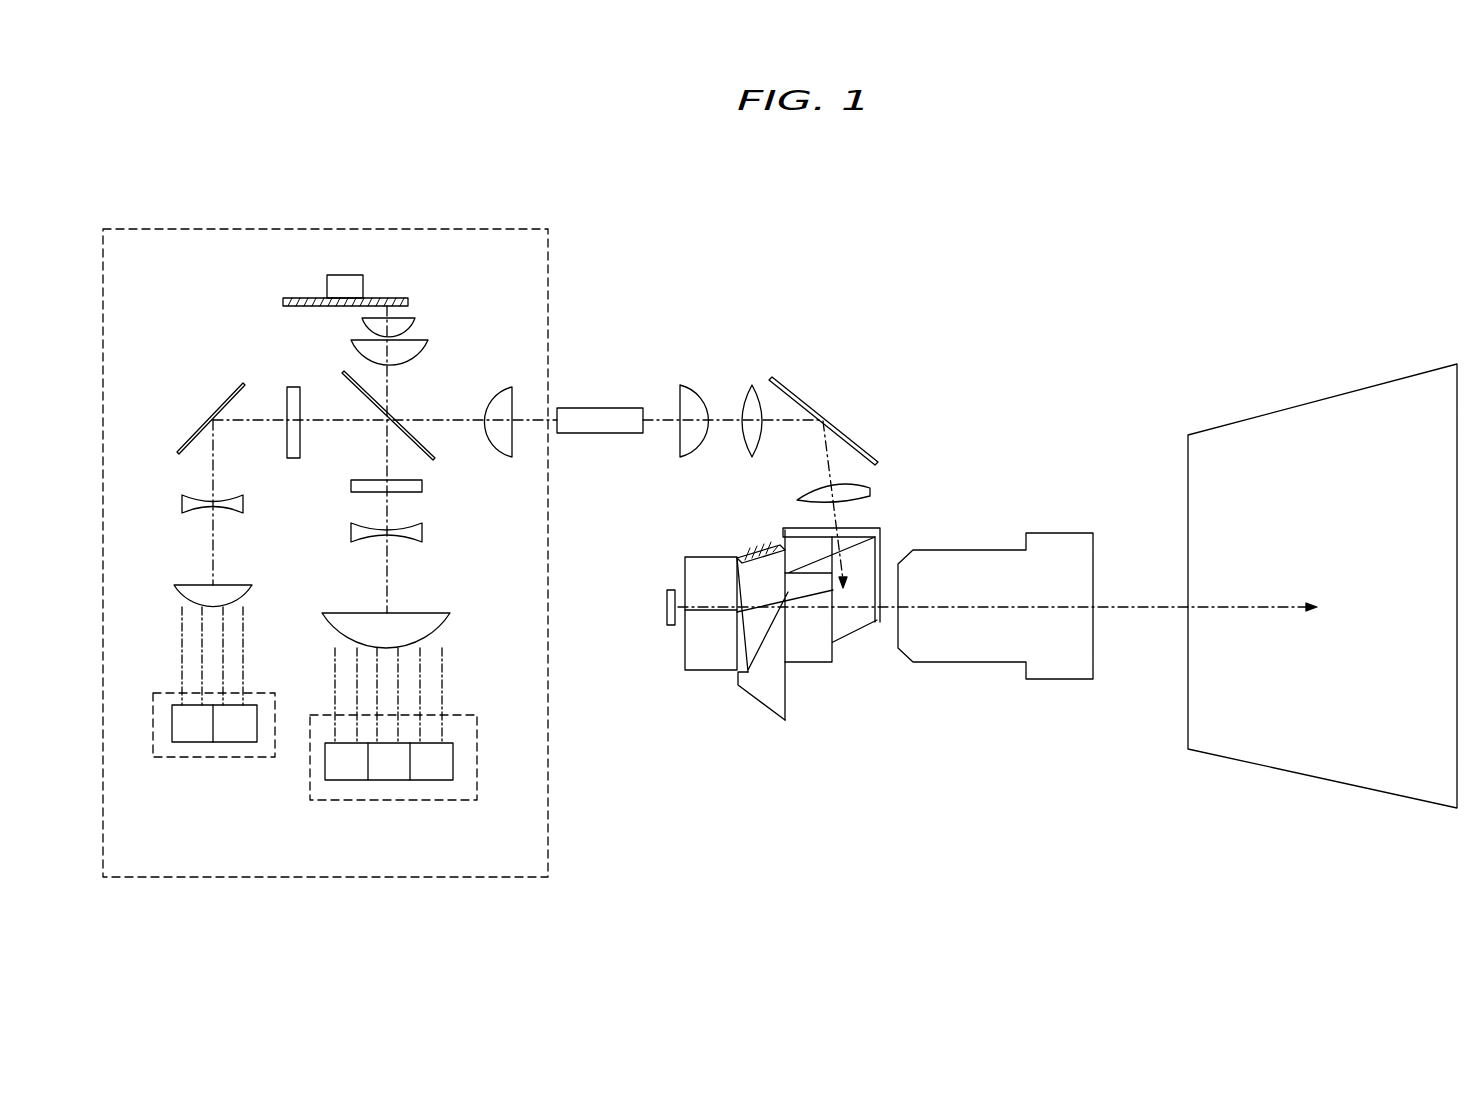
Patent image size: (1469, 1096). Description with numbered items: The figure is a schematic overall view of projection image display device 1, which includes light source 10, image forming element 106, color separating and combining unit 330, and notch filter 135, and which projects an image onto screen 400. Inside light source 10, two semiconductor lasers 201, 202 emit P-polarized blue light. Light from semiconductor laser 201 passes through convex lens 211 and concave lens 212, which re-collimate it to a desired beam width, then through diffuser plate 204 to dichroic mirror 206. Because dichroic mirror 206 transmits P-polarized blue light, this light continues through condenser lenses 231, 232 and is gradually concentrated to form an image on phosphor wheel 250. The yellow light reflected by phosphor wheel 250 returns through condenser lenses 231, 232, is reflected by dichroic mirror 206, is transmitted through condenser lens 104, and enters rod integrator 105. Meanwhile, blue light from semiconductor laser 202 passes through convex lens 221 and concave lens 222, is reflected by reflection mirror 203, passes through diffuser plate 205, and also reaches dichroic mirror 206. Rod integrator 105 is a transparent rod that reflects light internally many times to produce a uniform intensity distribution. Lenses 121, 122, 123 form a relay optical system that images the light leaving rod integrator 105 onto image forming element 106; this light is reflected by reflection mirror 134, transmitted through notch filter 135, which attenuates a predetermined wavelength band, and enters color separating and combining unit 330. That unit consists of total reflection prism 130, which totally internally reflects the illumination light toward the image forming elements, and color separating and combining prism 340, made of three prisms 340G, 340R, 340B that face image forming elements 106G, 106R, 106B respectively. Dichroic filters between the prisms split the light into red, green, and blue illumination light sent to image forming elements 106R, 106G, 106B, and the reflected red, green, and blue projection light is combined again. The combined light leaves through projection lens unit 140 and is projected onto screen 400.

The projection image display device 1 is at (1302, 246).
The light source 10 is at (507, 225).
The phosphor wheel 250 is at (325, 287).
The condenser lens 232 is at (415, 320).
The condenser lens 231 is at (428, 345).
The reflection mirror 203 is at (218, 402).
The diffuser plate 205 is at (293, 385).
The dichroic mirror 206 is at (433, 462).
The diffuser plate 204 is at (422, 492).
The concave lens 212 is at (422, 542).
The concave lens 222 is at (243, 503).
The convex lens 221 is at (252, 593).
The convex lens 211 is at (450, 617).
The semiconductor laser 202 is at (208, 758).
The semiconductor laser 201 is at (433, 802).
The condenser lens 104 is at (512, 450).
The rod integrator 105 is at (598, 415).
The lens 121 is at (683, 387).
The lens 122 is at (753, 385).
The reflection mirror 134 is at (847, 427).
The lens 123 is at (870, 488).
The notch filter 135 is at (881, 540).
The total reflection prism 130 is at (852, 620).
The color separating and combining prism 340 is at (709, 682).
The prism 340G is at (698, 660).
The prism 340R is at (752, 633).
The prism 340B is at (782, 734).
The image forming element 106 is at (809, 621).
The image forming element 106R is at (755, 555).
The image forming element 106G is at (667, 593).
The image forming element 106B is at (742, 675).
The color separating and combining unit 330 is at (652, 655).
The projection lens unit 140 is at (1057, 533).
The screen 400 is at (1235, 422).